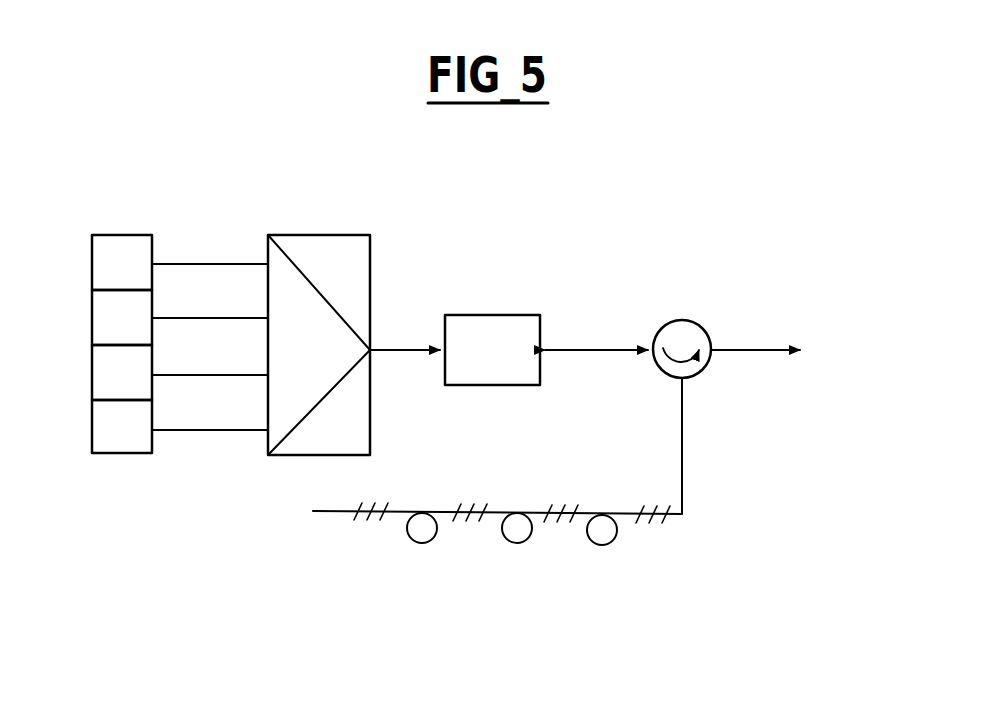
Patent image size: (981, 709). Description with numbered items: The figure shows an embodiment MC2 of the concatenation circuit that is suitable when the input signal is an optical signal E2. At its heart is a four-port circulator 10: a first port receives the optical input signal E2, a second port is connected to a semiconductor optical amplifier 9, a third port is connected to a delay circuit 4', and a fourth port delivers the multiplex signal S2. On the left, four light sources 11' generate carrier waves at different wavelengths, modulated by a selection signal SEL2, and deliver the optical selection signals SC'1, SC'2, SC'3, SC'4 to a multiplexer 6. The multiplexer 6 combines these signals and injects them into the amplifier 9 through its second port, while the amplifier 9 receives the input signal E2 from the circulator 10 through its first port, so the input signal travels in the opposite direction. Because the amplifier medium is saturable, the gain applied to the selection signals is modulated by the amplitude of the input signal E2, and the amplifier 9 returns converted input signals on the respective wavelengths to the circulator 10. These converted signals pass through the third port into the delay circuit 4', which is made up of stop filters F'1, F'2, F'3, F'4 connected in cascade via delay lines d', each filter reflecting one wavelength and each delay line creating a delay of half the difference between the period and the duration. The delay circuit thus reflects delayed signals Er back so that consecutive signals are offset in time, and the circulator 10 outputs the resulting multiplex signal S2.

The multiplexer 6 is at (328, 233).
The semiconductor optical amplifier 9 is at (500, 313).
The four-port circulator 10 is at (702, 330).
The light sources 11' is at (122, 383).
The delay circuit 4' is at (461, 527).
The concatenation circuit MC2 is at (495, 176).
The selection signal SEL2 is at (122, 232).
The optical selection signal SC'1 is at (210, 214).
The optical selection signal SC'2 is at (210, 299).
The optical selection signal SC'3 is at (210, 355).
The optical selection signal SC'4 is at (210, 410).
The optical input signal E2 is at (682, 318).
The multiplex signal S2 is at (761, 334).
The delayed signals Er is at (702, 415).
The filter F'1 is at (658, 561).
The filter F'2 is at (563, 552).
The filter F'3 is at (470, 551).
The filter F'4 is at (351, 539).
The delay line d' is at (509, 579).